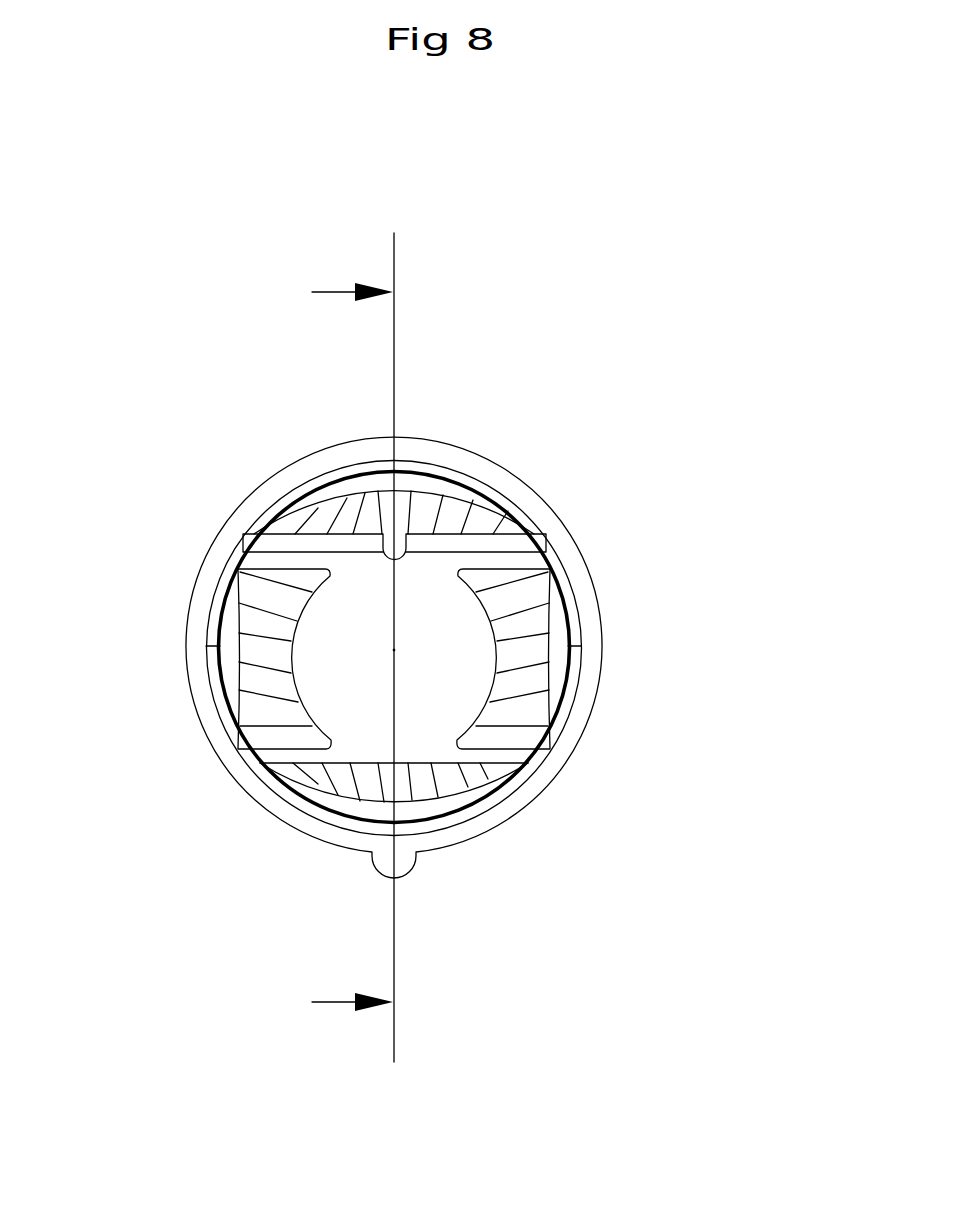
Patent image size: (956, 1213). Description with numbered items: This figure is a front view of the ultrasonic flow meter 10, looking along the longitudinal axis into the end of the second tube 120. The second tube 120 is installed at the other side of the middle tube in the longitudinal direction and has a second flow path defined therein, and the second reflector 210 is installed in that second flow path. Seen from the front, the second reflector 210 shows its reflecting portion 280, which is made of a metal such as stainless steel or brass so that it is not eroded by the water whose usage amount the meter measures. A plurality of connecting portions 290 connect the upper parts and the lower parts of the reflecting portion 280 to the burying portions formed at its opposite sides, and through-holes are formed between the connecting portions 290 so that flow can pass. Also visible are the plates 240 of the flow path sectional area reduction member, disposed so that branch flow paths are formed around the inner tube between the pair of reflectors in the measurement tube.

The bubble generator 10 is at (75, 136).
The second tube 120 is at (292, 402).
The second reflector 210 is at (438, 586).
The plates 240 is at (380, 787).
The reflecting portion 280 is at (440, 668).
The connecting portions 290 is at (276, 542).